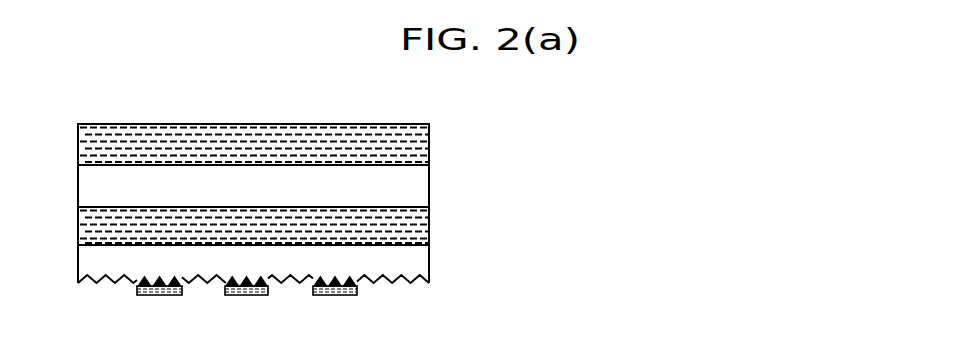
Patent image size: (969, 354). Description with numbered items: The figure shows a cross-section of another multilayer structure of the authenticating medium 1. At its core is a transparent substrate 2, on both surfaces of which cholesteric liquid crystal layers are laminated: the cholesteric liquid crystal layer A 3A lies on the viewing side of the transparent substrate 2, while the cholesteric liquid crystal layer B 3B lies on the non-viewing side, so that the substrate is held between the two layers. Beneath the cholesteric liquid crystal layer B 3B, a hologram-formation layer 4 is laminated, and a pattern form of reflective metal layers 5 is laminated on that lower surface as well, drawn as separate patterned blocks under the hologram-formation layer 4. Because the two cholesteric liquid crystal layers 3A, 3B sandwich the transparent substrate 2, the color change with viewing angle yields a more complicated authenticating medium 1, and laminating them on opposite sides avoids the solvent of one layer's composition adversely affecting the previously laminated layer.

The authenticating medium 1 is at (313, 124).
The transparent substrate 2 is at (403, 183).
The cholesteric liquid crystal layer A 3A is at (403, 145).
The cholesteric liquid crystal layer B 3B is at (403, 221).
The hologram-formation layer 4 is at (403, 262).
The reflective metal layers 5 is at (163, 295).